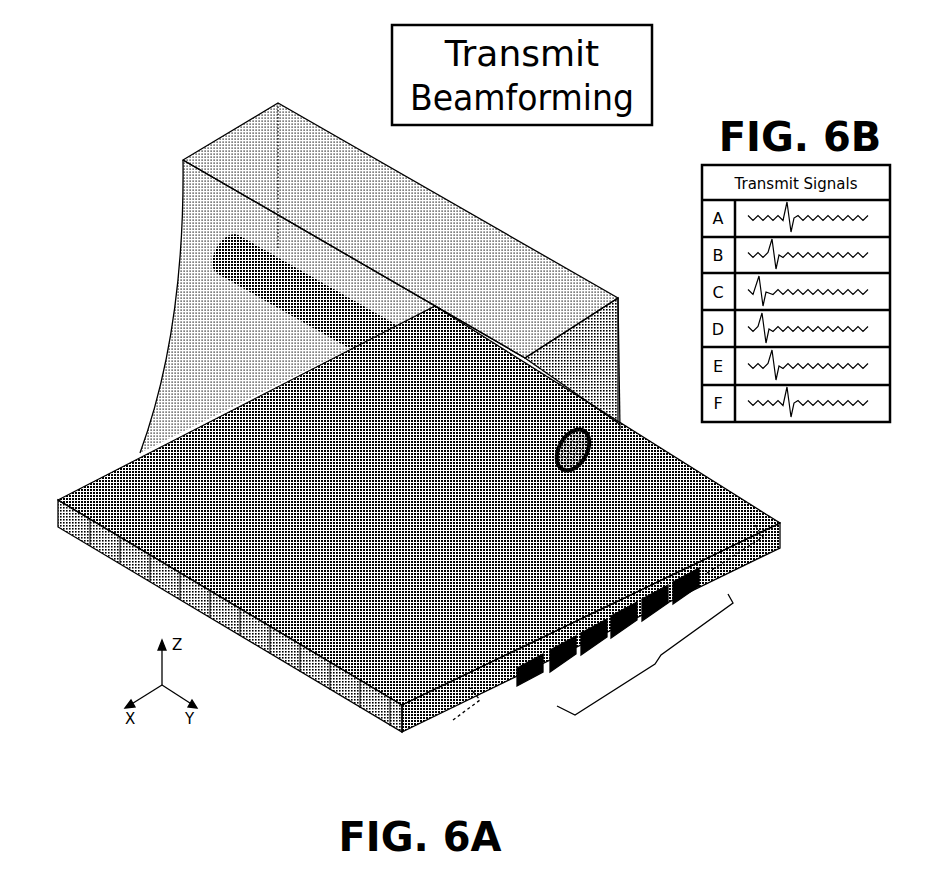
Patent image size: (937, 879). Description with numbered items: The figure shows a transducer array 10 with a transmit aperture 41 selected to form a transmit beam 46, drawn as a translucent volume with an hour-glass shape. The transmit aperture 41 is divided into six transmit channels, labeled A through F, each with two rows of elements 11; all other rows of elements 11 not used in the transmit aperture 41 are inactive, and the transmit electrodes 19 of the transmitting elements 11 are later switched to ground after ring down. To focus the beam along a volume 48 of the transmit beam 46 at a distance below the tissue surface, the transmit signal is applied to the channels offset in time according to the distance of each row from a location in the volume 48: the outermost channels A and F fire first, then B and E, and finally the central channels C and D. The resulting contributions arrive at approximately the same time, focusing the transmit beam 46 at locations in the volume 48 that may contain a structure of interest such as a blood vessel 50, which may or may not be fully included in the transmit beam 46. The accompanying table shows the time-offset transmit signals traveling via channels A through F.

The ultrasound transducer system 10 is at (70, 594).
The elements 11 is at (58, 524).
The transmit electrodes 19 is at (443, 720).
The transmit aperture 41 is at (625, 649).
The transmit beam 46 is at (479, 217).
The volume 48 is at (598, 378).
The blood vessel 50 is at (275, 310).